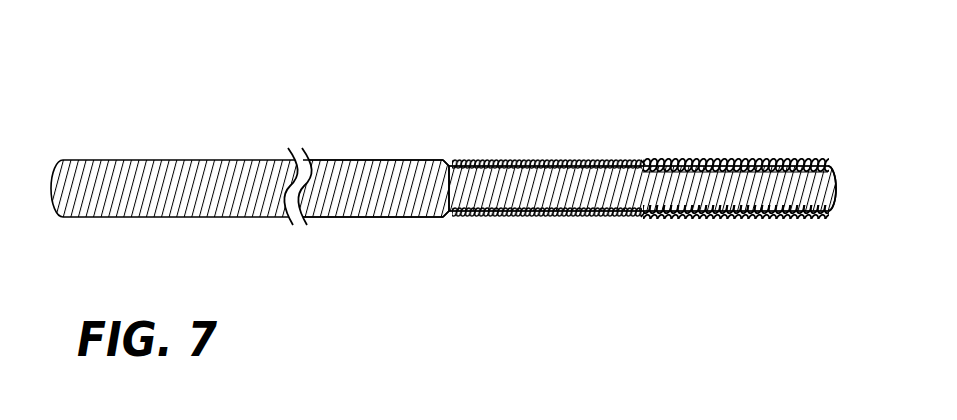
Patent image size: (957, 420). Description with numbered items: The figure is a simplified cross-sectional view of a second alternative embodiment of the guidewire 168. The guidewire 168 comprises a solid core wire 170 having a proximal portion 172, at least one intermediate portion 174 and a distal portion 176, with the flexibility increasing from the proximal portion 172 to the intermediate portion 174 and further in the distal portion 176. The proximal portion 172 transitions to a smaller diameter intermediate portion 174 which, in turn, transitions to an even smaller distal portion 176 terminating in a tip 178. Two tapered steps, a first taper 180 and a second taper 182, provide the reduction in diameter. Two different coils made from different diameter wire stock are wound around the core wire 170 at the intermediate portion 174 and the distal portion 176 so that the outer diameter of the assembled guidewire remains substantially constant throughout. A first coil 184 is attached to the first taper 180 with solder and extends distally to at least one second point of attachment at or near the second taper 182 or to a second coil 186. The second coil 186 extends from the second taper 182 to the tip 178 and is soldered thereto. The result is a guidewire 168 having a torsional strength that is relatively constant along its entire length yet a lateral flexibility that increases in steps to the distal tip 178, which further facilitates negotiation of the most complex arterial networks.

The guidewire 168 is at (624, 264).
The solid core wire 170 is at (351, 138).
The proximal portion 172 is at (129, 180).
The intermediate portion 174 is at (528, 188).
The distal portion 176 is at (708, 190).
The tip 178 is at (838, 192).
The first taper 180 is at (450, 160).
The second taper 182 is at (645, 160).
The first coil 184 is at (545, 160).
The second coil 186 is at (772, 158).